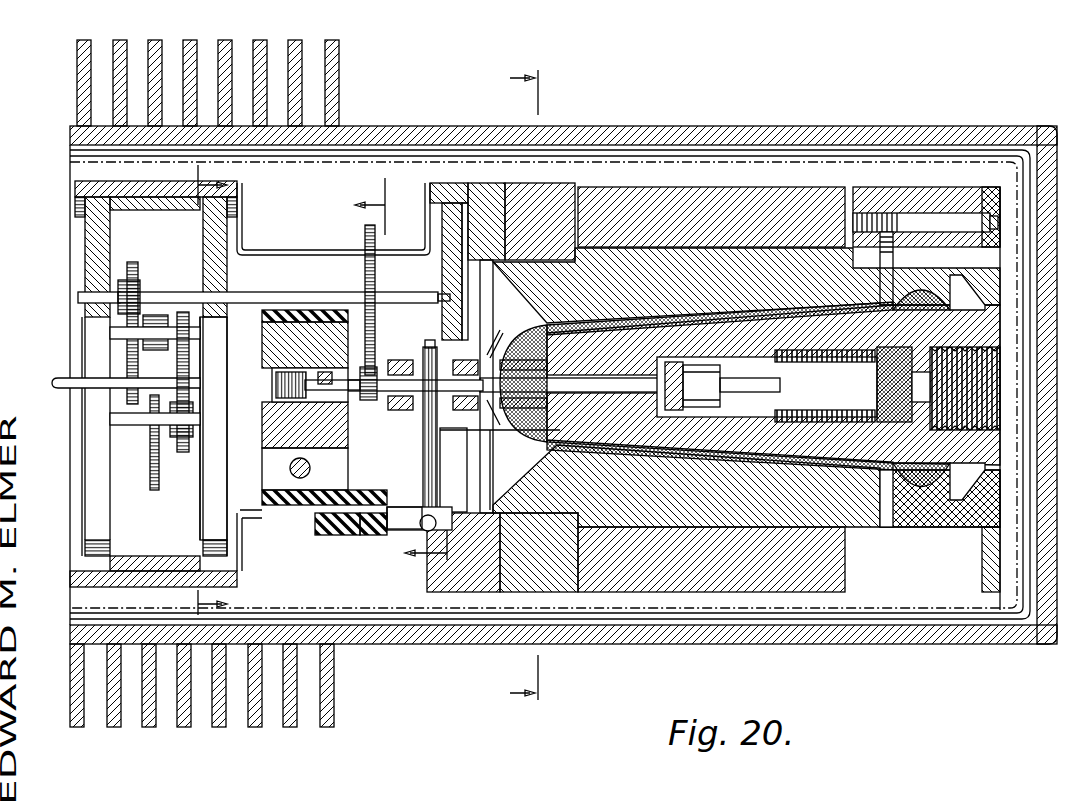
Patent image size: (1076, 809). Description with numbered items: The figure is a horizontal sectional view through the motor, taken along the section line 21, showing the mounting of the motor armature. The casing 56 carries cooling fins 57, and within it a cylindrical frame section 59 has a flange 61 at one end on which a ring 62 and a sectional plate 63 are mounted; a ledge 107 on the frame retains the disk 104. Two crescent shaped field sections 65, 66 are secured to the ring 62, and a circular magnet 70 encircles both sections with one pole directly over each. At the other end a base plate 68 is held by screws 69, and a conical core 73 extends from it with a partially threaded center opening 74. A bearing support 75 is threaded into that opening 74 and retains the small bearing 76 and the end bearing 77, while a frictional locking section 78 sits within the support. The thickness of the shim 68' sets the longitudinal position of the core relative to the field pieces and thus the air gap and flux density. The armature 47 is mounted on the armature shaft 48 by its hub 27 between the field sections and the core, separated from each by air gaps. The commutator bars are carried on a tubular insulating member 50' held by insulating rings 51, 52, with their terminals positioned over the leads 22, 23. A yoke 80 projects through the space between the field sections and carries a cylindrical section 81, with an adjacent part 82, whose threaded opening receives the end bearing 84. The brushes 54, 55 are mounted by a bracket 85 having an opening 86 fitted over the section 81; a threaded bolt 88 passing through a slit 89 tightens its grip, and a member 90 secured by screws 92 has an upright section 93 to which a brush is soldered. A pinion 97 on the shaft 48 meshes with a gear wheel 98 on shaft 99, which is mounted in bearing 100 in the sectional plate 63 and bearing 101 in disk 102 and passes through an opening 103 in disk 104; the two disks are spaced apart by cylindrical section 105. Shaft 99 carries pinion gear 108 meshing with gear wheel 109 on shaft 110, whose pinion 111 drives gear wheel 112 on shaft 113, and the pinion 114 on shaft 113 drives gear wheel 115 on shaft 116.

The section line 21- 21 is at (508, 386).
The lead 22 is at (399, 379).
The lead 23 is at (227, 390).
The armature hub 27 is at (545, 355).
The armature 47 is at (730, 462).
The armature shaft 48 is at (608, 377).
The tubular insulating member 50' is at (459, 403).
The insulating ring 51 is at (472, 412).
The insulating ring 52 is at (398, 360).
The brush 54 is at (423, 473).
The brush 55 is at (487, 355).
The casing 56 is at (700, 127).
The cooling fins 57 is at (331, 40).
The cylindrical frame section 59 is at (75, 188).
The flange 61 is at (483, 200).
The ring 62 is at (552, 193).
The sectional plate 63 is at (450, 202).
The field section 65 is at (746, 285).
The field section 66 is at (746, 486).
The base plate 68 is at (993, 359).
The shim 68' is at (987, 598).
The screws 69 is at (925, 212).
The circular magnet 70 is at (765, 190).
The conical core 73 is at (773, 416).
The partially threaded center opening 74 is at (762, 418).
The bearing support 75 is at (855, 422).
The small bearing 76 is at (678, 362).
The end bearing 77 is at (708, 364).
The frictional locking section 78 is at (905, 422).
The yoke 80 is at (408, 420).
The cylindrical section 81 is at (270, 441).
The upper block 82 is at (285, 362).
The end bearing 84 is at (290, 385).
The bracket 85 is at (262, 497).
The opening 86 is at (262, 335).
The threaded bolt 88 is at (308, 466).
The slit 89 is at (272, 467).
The member 90 is at (330, 536).
The screws 92 is at (352, 536).
The upright section 93 is at (396, 530).
The pinion 97 is at (372, 400).
The gear wheel 98 is at (365, 235).
The shaft 99 is at (330, 291).
The bearing 100 is at (440, 295).
The bearing 101 is at (85, 293).
The disk 102 is at (95, 241).
The opening 103 is at (203, 290).
The disk 104 is at (202, 532).
The cylindrical section 105 is at (158, 572).
The ledge 107 is at (230, 198).
The pinion gear 108 is at (140, 282).
The gear wheel 109 is at (127, 360).
The shaft 110 is at (110, 335).
The pinion 111 is at (155, 315).
The gear wheel 112 is at (152, 464).
The shaft 113 is at (128, 432).
The pinion 114 is at (168, 438).
The gear wheel 115 is at (190, 440).
The shaft 116 is at (60, 390).